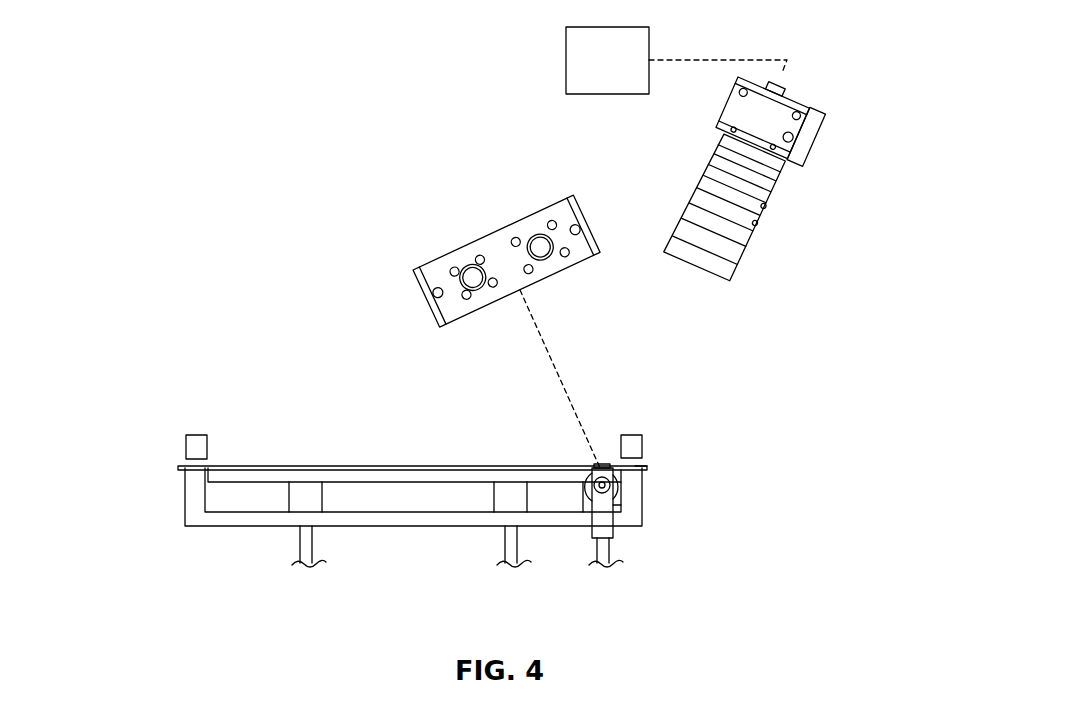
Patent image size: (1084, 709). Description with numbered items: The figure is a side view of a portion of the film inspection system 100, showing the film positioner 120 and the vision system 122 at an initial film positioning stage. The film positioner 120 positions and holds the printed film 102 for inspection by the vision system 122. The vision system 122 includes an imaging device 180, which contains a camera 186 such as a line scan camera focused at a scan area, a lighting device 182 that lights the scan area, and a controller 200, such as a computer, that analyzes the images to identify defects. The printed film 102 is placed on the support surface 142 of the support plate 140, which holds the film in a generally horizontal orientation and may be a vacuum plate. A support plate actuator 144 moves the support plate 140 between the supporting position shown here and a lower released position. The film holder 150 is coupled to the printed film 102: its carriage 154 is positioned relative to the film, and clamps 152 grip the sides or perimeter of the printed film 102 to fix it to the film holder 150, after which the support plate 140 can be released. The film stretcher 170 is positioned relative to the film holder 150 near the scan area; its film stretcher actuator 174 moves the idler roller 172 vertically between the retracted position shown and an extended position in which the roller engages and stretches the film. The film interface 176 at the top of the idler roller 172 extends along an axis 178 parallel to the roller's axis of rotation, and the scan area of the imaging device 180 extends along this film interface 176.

The film inspection system 100 is at (455, 124).
The printed film 102 is at (643, 467).
The film positioner 120 is at (410, 500).
The vision system 122 is at (793, 174).
The support plate 140 is at (441, 483).
The support surface 142 is at (407, 466).
The support plate actuator 144 is at (312, 543).
The film holder 150 is at (172, 515).
The clamps 152 is at (195, 435).
The carriage 154 is at (632, 493).
The film stretcher 170 is at (617, 537).
The idler roller 172 is at (620, 477).
The film stretcher actuator 174 is at (597, 548).
The film interface 176 is at (594, 464).
The axis 178 is at (612, 510).
The imaging device 180 is at (800, 103).
The lighting device 182 is at (487, 240).
The camera 186 is at (812, 138).
The controller 200 is at (605, 95).